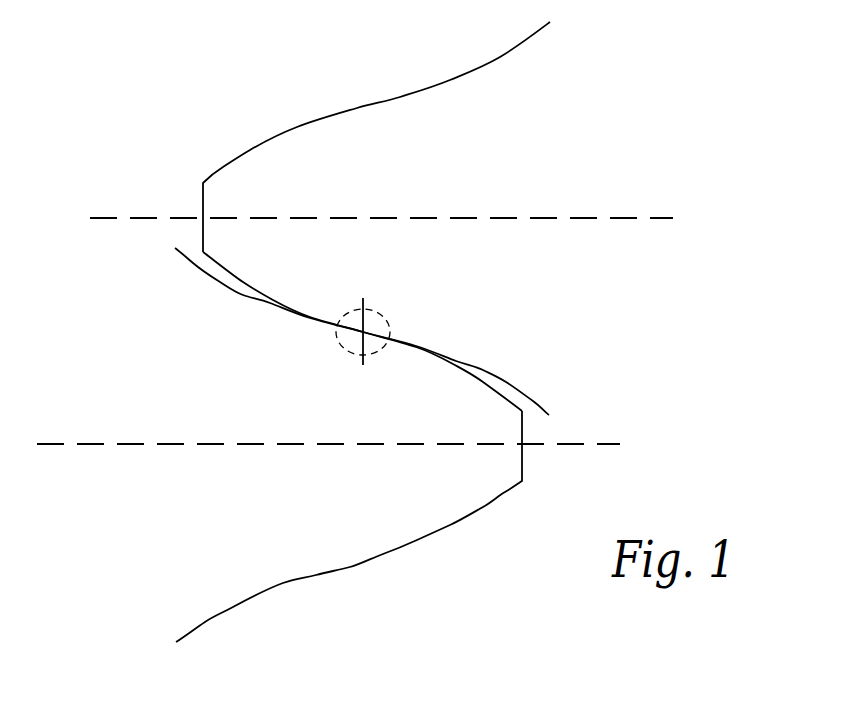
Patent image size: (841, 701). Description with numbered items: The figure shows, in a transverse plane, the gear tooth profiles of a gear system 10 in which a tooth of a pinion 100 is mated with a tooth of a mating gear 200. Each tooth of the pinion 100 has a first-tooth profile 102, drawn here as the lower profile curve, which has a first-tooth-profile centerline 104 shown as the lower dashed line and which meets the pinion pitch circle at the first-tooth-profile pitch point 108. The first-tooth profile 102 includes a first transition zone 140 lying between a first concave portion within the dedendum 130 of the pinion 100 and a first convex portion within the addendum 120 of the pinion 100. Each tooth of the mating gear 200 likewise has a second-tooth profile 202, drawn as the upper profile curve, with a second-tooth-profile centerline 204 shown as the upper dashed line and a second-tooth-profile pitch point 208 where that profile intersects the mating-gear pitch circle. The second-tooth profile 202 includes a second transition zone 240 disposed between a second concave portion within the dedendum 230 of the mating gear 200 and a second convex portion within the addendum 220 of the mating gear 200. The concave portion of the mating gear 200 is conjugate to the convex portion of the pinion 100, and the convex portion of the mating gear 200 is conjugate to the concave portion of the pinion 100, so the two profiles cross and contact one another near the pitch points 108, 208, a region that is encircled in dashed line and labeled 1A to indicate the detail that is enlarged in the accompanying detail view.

The gear system 10 is at (233, 85).
The pinion 100 is at (200, 483).
The first-tooth profile 102 is at (213, 297).
The first-tooth-profile centerline 104 is at (95, 442).
The first-tooth-profile pitch point 108 is at (364, 386).
The addendum of the pinion 120 is at (480, 390).
The dedendum of the pinion 130 is at (267, 322).
The first transition zone 140 is at (355, 340).
The mating gear 200 is at (627, 140).
The second-tooth profile 202 is at (225, 253).
The second-tooth-profile centerline 204 is at (625, 217).
The second-tooth-profile pitch point 208 is at (364, 318).
The addendum of the mating gear 220 is at (272, 290).
The dedendum of the mating gear 230 is at (498, 358).
The second transition zone 240 is at (386, 321).
The detail area shown in FIG. 1A is at (380, 312).